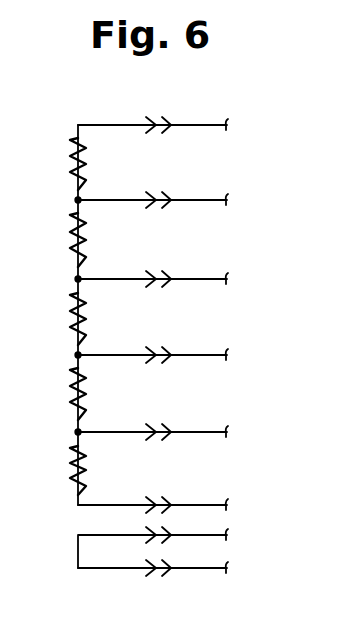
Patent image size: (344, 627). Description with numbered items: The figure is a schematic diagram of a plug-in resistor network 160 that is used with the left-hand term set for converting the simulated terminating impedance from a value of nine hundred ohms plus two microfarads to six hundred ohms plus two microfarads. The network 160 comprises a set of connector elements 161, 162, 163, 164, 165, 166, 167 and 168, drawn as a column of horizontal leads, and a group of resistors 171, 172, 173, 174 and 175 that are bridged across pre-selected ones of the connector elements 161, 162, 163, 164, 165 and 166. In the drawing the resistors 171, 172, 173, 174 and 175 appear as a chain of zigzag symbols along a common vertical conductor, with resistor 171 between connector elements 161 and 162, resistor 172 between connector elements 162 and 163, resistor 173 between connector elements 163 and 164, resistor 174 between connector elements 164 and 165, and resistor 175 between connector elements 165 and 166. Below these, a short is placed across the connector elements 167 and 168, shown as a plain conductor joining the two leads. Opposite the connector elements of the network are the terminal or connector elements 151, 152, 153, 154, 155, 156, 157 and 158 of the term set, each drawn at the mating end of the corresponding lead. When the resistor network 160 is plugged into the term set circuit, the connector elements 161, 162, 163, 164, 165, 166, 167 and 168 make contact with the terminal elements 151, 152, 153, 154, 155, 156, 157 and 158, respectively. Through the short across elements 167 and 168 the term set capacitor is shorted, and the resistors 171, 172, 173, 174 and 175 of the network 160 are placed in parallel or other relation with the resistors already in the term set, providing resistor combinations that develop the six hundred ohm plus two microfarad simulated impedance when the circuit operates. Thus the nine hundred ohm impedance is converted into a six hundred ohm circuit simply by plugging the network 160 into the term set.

The plug-in resistor network 160 is at (89, 122).
The resistor 171 is at (68, 162).
The resistor 172 is at (68, 242).
The resistor 173 is at (70, 318).
The resistor 174 is at (70, 391).
The resistor 175 is at (70, 470).
The connector element 161 is at (113, 123).
The connector element 162 is at (117, 185).
The connector element 163 is at (110, 278).
The connector element 164 is at (110, 354).
The connector element 165 is at (115, 431).
The connector element 166 is at (112, 504).
The connector element 167 is at (125, 533).
The connector element 168 is at (125, 570).
The terminal or connector element 151 is at (195, 125).
The terminal or connector element 152 is at (194, 200).
The terminal or connector element 153 is at (193, 279).
The terminal or connector element 154 is at (198, 355).
The terminal or connector element 155 is at (200, 432).
The terminal or connector element 156 is at (200, 505).
The terminal or connector element 157 is at (207, 535).
The terminal or connector element 158 is at (207, 568).